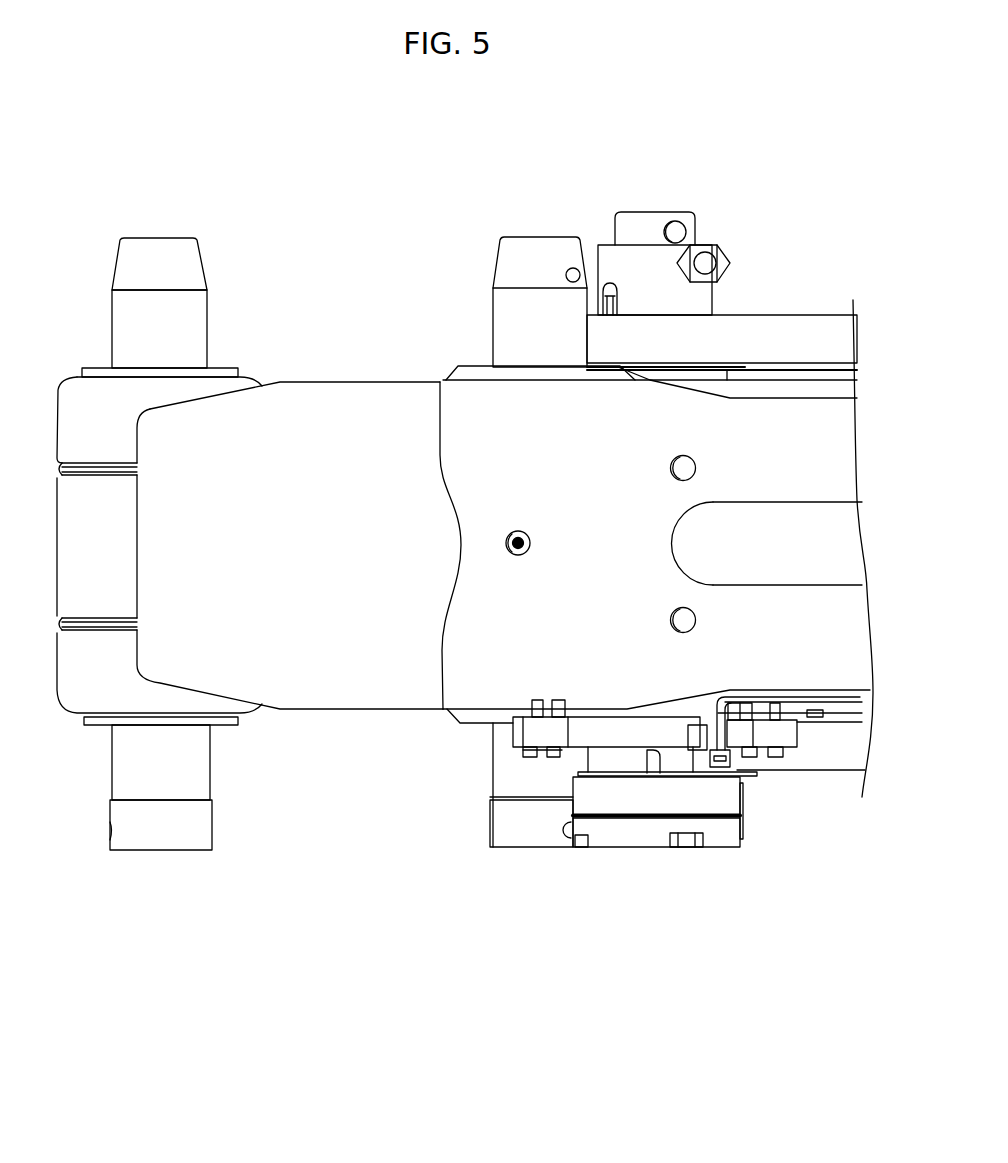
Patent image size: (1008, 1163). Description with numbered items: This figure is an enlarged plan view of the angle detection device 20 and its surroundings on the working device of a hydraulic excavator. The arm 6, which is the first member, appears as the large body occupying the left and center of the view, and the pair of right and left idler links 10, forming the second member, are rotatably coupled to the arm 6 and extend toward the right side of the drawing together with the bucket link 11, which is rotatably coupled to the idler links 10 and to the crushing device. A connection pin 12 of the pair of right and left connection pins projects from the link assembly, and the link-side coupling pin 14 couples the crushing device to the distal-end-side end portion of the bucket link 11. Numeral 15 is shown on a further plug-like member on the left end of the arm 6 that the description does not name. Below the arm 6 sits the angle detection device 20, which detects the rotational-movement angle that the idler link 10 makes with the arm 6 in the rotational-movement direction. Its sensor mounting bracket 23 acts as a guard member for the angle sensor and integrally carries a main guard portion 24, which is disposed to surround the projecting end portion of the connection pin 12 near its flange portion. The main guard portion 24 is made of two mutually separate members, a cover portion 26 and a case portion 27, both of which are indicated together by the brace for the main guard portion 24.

The arm 6 is at (362, 380).
The idler link 10 is at (770, 325).
The bucket link 11 is at (818, 420).
The connection pin 12 is at (647, 218).
The link-side coupling pin 14 is at (540, 250).
The plug 15 is at (158, 252).
The angle detection device 20 is at (572, 834).
The sensor mounting bracket 23 is at (618, 848).
The main guard portion 24 is at (545, 811).
The cover portion 26 is at (583, 827).
The case portion 27 is at (583, 790).